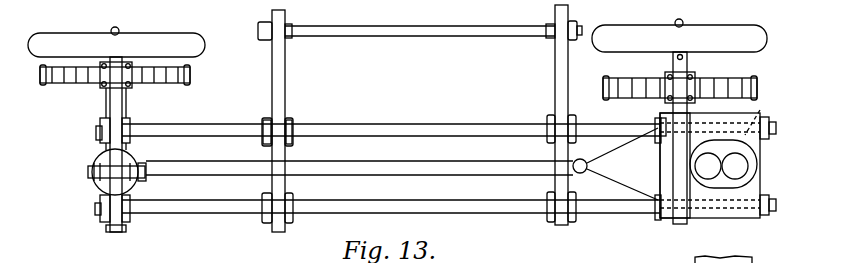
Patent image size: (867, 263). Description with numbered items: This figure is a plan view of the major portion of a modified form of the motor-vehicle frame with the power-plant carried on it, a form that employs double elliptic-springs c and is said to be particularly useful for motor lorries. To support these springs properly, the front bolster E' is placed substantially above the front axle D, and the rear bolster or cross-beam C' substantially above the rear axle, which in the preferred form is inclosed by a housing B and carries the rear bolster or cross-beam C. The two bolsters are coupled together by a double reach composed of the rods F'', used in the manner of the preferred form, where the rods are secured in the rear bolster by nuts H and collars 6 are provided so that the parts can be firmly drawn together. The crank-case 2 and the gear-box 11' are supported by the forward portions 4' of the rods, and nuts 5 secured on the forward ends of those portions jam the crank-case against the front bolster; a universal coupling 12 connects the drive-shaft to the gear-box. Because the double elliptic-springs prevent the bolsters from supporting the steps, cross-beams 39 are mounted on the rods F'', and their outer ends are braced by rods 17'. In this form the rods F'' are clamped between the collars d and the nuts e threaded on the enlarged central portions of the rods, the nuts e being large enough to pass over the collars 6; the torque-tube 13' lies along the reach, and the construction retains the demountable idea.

The bolster or cross-beam C' is at (116, 129).
The rear bolster or cross-beam C is at (115, 82).
The collars 6 is at (125, 122).
The nuts H is at (97, 138).
The housing B is at (104, 226).
The cross-beams 39 is at (286, 72).
The nuts e is at (266, 120).
The collars d is at (290, 120).
The rods 17' is at (420, 44).
The rod 13' is at (359, 179).
The rods F'' is at (391, 157).
The universal coupling 12 is at (590, 165).
The gear-box 11' is at (626, 164).
The bolster E' is at (653, 176).
The front axle D is at (688, 63).
The double elliptic-springs c is at (643, 88).
The crank-case 2 is at (727, 214).
The forward portions 4' is at (761, 114).
The nuts 5 is at (763, 136).